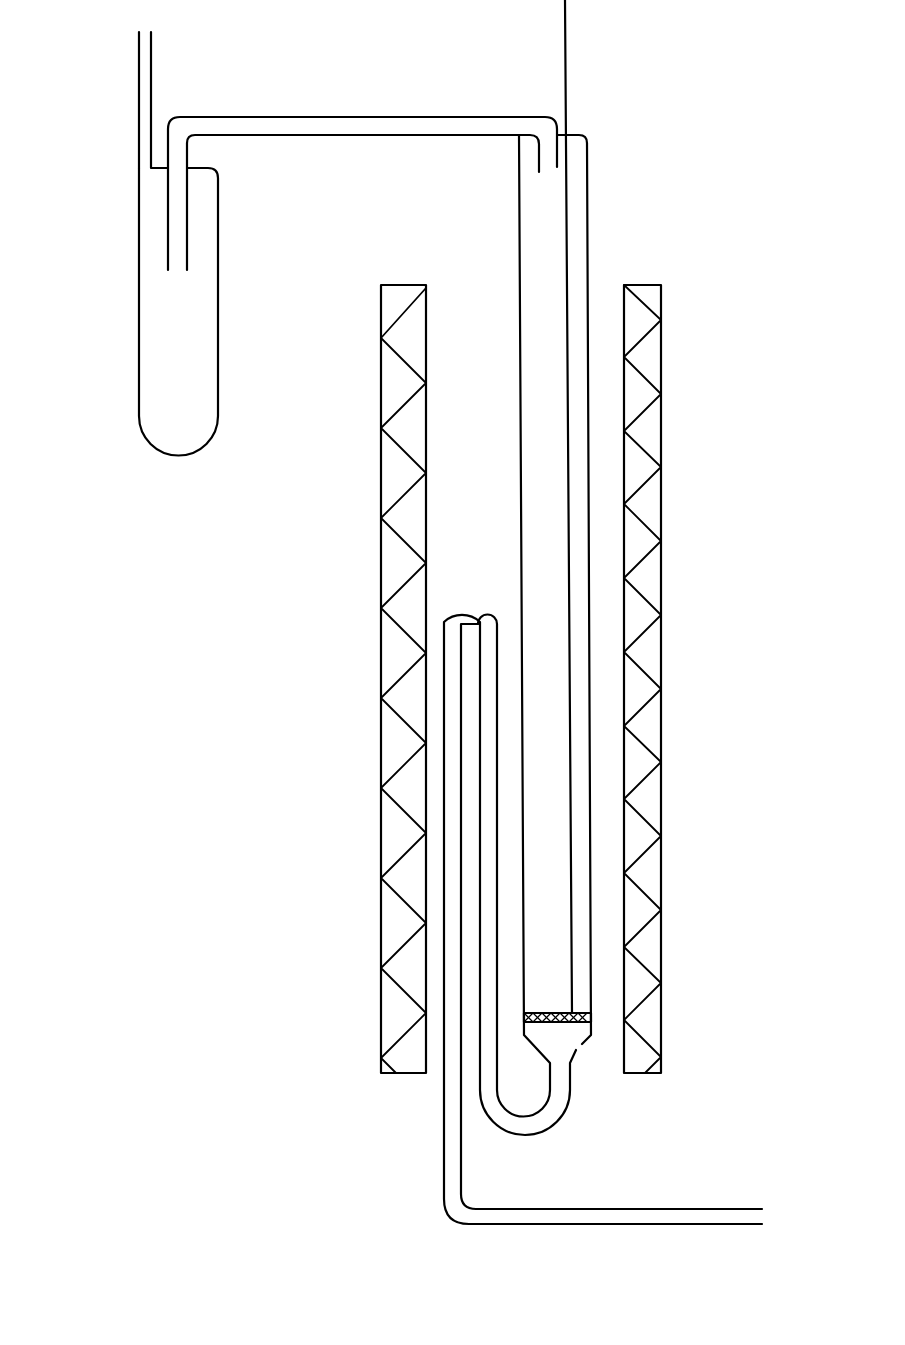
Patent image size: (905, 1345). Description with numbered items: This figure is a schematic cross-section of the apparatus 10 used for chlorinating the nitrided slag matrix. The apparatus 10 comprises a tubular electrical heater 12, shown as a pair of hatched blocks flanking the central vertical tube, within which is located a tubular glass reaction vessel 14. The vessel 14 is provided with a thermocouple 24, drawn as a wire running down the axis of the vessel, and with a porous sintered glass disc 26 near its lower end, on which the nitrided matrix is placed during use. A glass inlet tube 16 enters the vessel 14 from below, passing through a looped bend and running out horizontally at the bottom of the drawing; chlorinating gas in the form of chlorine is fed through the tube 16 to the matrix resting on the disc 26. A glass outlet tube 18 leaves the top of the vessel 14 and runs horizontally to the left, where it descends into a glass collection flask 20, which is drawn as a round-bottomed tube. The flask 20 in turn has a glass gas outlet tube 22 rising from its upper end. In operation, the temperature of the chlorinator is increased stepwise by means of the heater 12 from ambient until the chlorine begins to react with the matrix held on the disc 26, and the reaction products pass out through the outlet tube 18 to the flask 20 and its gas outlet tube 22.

The apparatus 10 is at (726, 100).
The tubular electrical heater 12 is at (690, 522).
The tubular glass reaction vessel 14 is at (622, 711).
The glass inlet tube 16 is at (628, 1215).
The glass outlet tube 18 is at (412, 117).
The glass collection flask 20 is at (114, 286).
The glass gas outlet tube 22 is at (151, 92).
The thermocouple 24 is at (566, 62).
The porous sintered glass disc 26 is at (562, 1005).